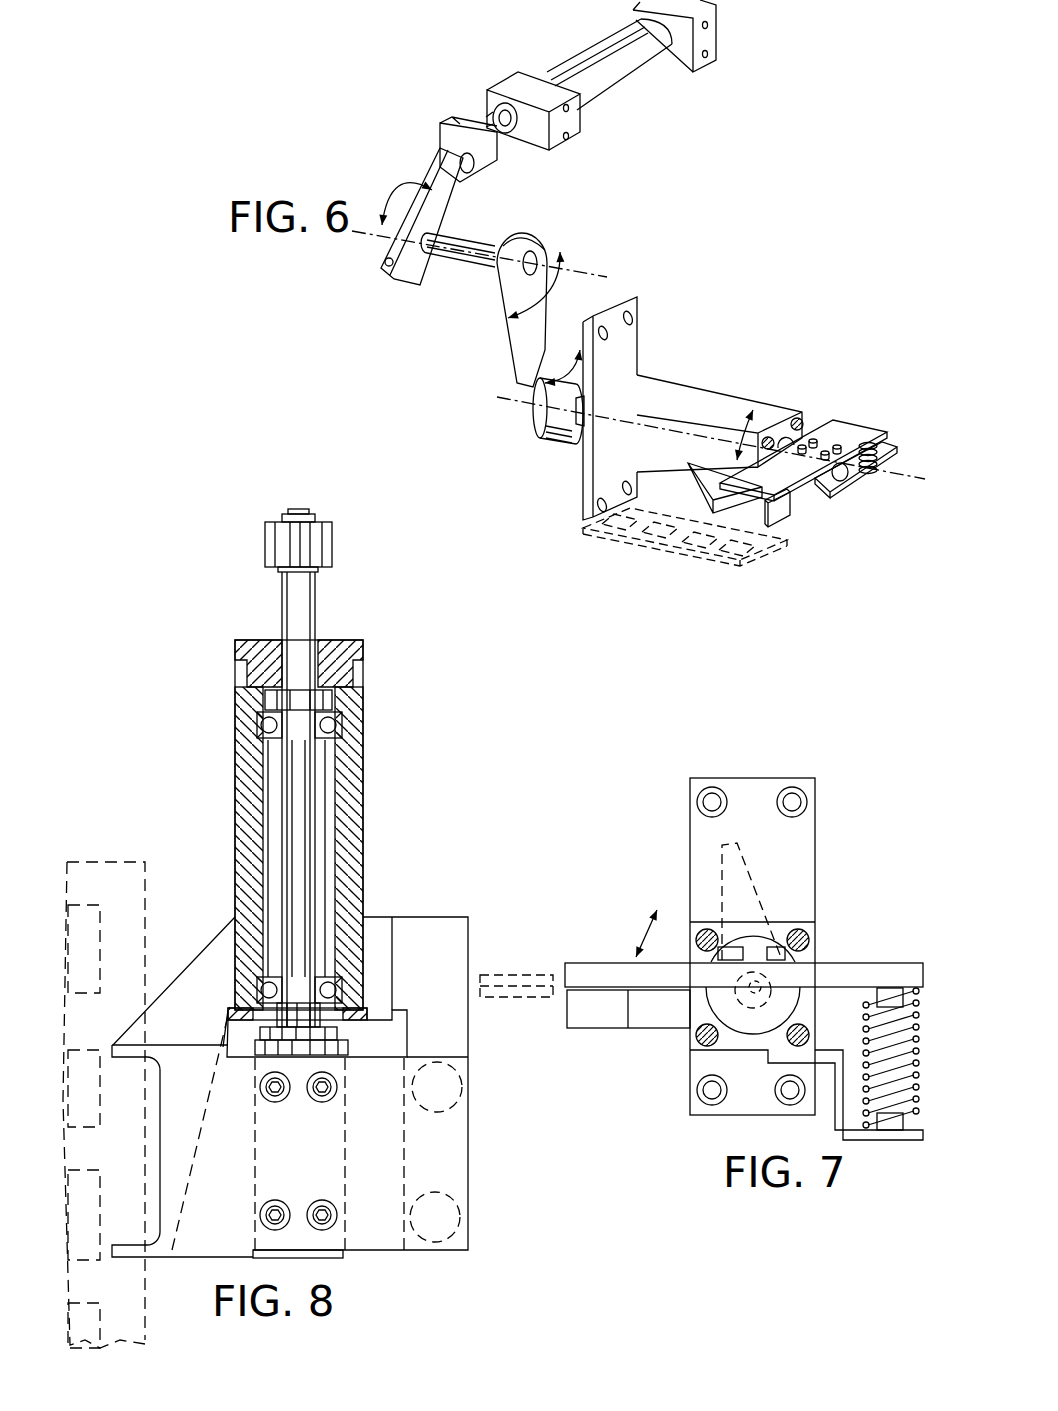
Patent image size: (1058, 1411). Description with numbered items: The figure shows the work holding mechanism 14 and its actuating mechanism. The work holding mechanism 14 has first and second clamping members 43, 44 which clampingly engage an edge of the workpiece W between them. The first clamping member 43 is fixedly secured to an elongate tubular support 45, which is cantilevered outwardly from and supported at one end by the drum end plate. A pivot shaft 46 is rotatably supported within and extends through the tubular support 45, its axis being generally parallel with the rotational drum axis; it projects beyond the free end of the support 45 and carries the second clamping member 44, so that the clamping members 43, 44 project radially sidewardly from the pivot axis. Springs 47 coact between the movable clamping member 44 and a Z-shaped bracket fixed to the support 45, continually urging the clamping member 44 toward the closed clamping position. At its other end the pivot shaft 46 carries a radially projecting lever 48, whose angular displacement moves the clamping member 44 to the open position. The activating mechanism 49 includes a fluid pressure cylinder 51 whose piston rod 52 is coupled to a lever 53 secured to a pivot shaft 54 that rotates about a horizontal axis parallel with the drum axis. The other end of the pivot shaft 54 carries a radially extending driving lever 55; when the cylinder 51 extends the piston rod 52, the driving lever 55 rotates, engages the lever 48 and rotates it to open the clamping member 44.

In FIG. 6, the work holding mechanism 14 is at (733, 378).
In FIG. 8, the work holding mechanism 14 is at (405, 890).
In FIG. 6, the first clamping member 43 is at (710, 483).
In FIG. 8, the first clamping member 43 is at (200, 975).
In FIG. 7, the first clamping member 43 is at (645, 1023).
In FIG. 6, the second clamping member 44 is at (782, 480).
In FIG. 8, the second clamping member 44 is at (205, 1238).
In FIG. 7, the second clamping member 44 is at (598, 973).
In FIG. 6, the elongate tubular support 45 is at (677, 393).
In FIG. 8, the elongate tubular support 45 is at (352, 773).
In FIG. 7, the elongate tubular support 45 is at (807, 958).
In FIG. 6, the pivot shaft 46 is at (580, 437).
In FIG. 8, the pivot shaft 46 is at (300, 820).
In FIG. 6, the springs 47 is at (877, 452).
In FIG. 8, the springs 47 is at (457, 1213).
In FIG. 7, the springs 47 is at (913, 1063).
In FIG. 6, the lever 48 is at (543, 430).
In FIG. 8, the lever 48 is at (334, 548).
In FIG. 7, the lever 48 is at (742, 882).
In FIG. 6, the activating mechanism 49 is at (642, 106).
In FIG. 6, the fluid pressure cylinder 51 is at (583, 63).
In FIG. 6, the piston rod 52 is at (490, 120).
In FIG. 6, the lever 53 is at (442, 209).
In FIG. 6, the pivot shaft 54 is at (453, 262).
In FIG. 6, the driving lever 55 is at (517, 347).
In FIG. 6, the workpiece W is at (690, 568).
In FIG. 8, the workpiece W is at (110, 888).
In FIG. 7, the workpiece W is at (513, 972).